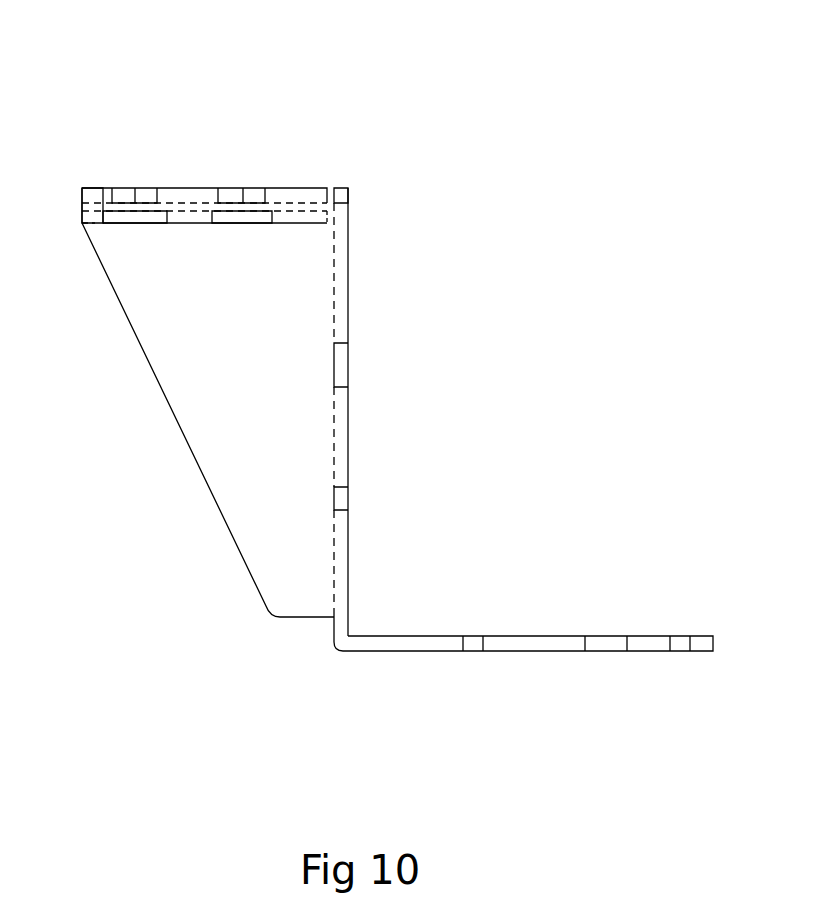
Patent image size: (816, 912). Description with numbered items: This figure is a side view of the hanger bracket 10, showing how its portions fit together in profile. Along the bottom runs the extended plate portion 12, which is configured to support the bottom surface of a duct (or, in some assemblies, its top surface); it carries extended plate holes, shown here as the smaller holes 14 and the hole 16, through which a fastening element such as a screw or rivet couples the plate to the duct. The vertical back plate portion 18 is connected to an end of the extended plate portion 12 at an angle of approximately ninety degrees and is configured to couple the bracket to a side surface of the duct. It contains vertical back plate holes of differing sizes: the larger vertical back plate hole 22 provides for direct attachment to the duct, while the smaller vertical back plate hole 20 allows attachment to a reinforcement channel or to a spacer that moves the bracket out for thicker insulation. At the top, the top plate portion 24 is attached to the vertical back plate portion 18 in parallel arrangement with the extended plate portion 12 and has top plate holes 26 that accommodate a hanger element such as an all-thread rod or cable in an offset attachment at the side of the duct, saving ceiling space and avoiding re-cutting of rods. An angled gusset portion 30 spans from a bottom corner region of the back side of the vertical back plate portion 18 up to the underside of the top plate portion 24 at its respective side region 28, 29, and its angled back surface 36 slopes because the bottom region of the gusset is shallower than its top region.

The hanger bracket 10 is at (377, 332).
The extended plate portion 12 is at (538, 625).
The smaller extended plate holes 14 is at (475, 636).
The extended plate hole 16 is at (605, 636).
The vertical back plate portion 18 is at (368, 267).
The smaller vertical back plate hole 20 is at (348, 497).
The larger vertical back plate hole 22 is at (348, 365).
The top plate portion 24 is at (185, 172).
The top plate holes 26 is at (136, 188).
The side region of top plate portion 28 is at (295, 188).
The side region of top plate portion 29 is at (97, 188).
The angled gusset portion 30 is at (213, 537).
The angled back surface 36 is at (172, 418).